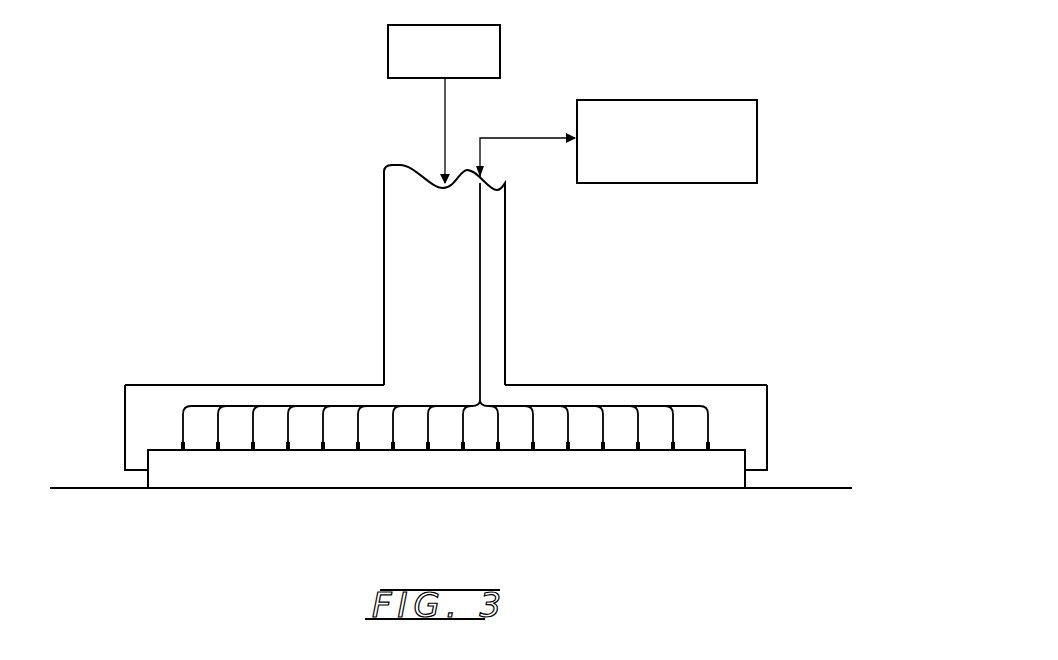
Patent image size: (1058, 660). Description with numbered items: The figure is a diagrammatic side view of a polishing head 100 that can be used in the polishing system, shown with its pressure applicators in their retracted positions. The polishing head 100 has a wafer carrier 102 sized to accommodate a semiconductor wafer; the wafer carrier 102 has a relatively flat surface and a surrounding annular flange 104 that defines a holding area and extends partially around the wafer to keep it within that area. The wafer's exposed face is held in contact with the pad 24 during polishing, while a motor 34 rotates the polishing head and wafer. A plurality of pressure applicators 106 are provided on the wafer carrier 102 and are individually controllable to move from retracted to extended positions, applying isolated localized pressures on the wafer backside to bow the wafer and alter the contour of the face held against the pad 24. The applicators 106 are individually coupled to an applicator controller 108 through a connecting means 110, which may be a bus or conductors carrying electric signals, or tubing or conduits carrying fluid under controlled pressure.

The pad 24 is at (797, 488).
The motor 34 is at (500, 47).
The polishing head 100 is at (325, 220).
The wafer carrier 102 is at (505, 305).
The annular flange 104 is at (137, 460).
The pressure applicators 106 is at (255, 450).
The applicator controller 108 is at (680, 183).
The connecting means 110 is at (480, 260).